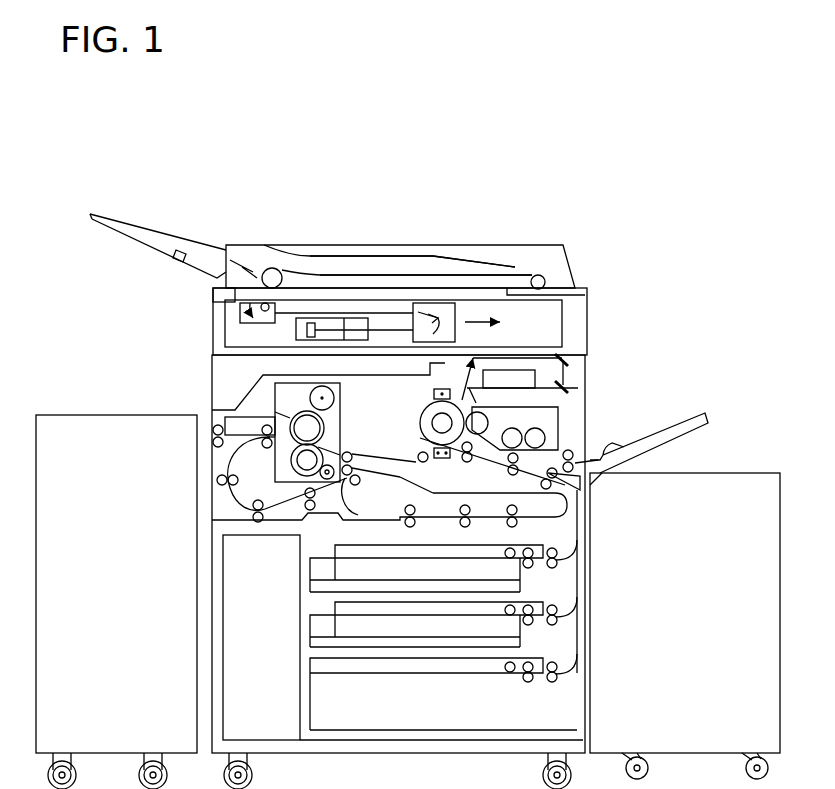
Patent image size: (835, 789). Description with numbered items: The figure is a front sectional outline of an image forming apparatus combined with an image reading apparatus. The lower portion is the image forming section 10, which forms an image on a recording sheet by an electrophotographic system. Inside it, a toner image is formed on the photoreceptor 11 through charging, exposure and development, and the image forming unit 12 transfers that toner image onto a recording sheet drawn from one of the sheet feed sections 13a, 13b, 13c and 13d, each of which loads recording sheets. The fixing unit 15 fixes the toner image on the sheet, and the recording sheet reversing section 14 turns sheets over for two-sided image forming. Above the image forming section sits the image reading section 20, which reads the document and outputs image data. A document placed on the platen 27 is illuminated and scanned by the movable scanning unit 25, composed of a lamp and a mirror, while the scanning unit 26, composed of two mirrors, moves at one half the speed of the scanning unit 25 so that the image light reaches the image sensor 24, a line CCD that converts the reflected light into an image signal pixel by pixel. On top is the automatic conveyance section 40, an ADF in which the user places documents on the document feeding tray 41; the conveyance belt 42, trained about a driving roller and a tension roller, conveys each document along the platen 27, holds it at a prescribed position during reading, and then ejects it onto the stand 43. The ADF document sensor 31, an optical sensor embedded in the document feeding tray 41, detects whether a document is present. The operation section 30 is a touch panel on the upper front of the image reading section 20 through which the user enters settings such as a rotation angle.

The image forming section 10 is at (597, 387).
The photoreceptor 11 is at (489, 440).
The image forming unit 12 is at (498, 397).
The sheet feed section 13a is at (343, 570).
The sheet feed section 13b is at (343, 627).
The sheet feed section 13c is at (343, 698).
The sheet feed section 13d is at (750, 465).
The recording sheet reversing section 14 is at (365, 496).
The fixing unit 15 is at (352, 410).
The image reading section 20 is at (596, 318).
The image sensor 24 is at (296, 330).
The movable scanning unit 25 is at (240, 310).
The scanning unit 26 is at (457, 310).
The platen 27 is at (362, 283).
The operation section 30 is at (117, 408).
The ADF document sensor 31 is at (188, 245).
The automatic conveyance section 40 is at (503, 235).
The document feeding tray 41 is at (135, 242).
The conveyance belt 42 is at (427, 273).
The stand 43 is at (315, 245).